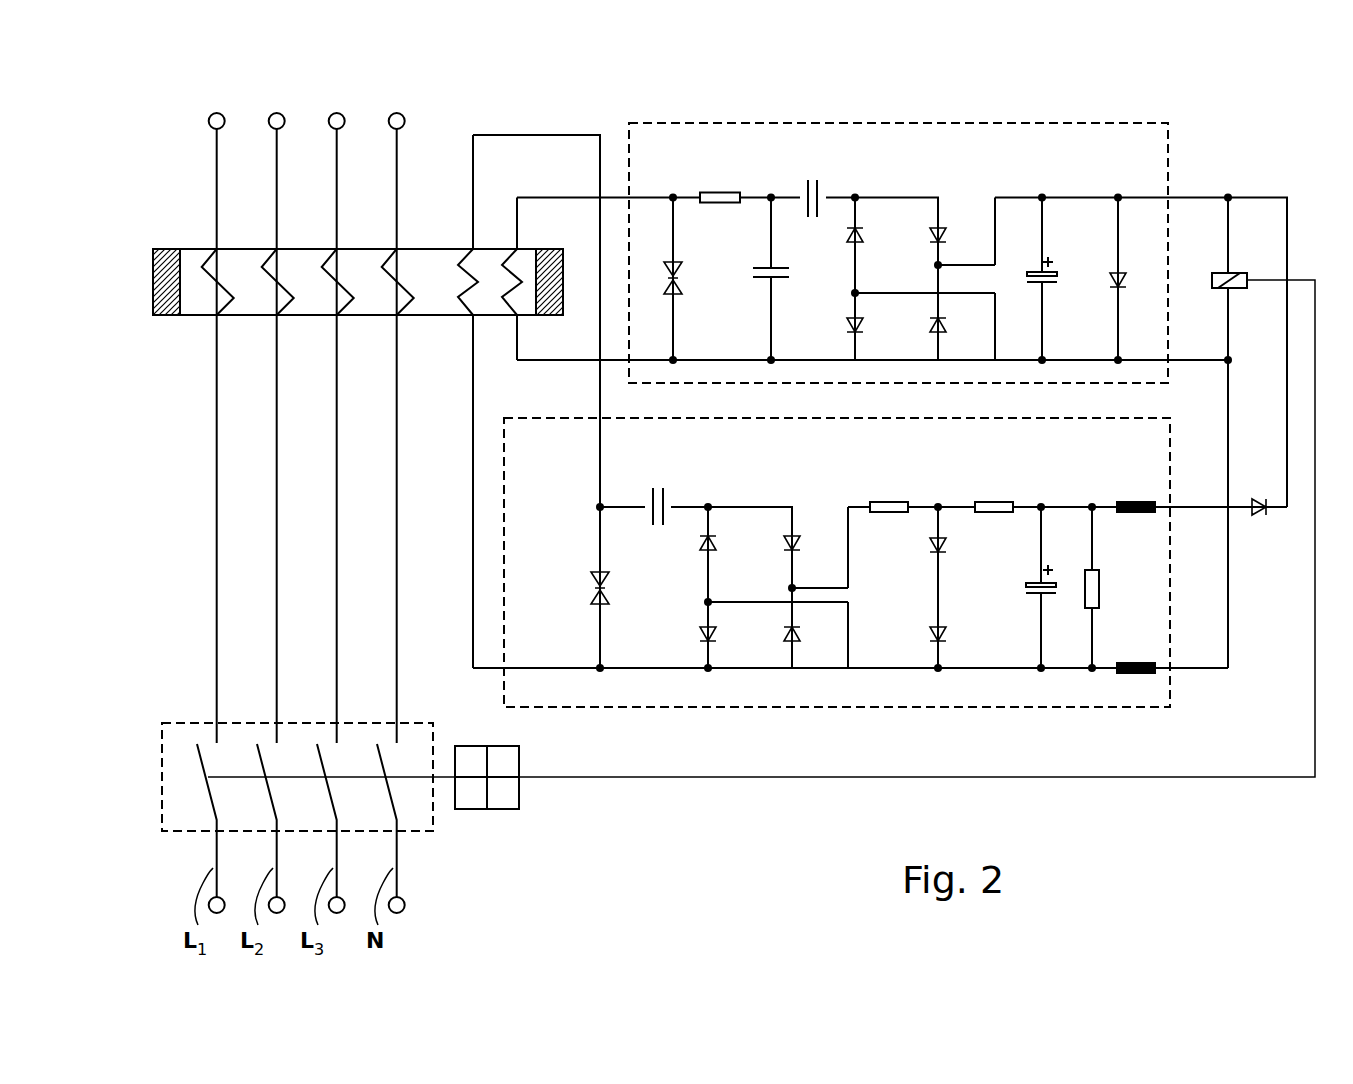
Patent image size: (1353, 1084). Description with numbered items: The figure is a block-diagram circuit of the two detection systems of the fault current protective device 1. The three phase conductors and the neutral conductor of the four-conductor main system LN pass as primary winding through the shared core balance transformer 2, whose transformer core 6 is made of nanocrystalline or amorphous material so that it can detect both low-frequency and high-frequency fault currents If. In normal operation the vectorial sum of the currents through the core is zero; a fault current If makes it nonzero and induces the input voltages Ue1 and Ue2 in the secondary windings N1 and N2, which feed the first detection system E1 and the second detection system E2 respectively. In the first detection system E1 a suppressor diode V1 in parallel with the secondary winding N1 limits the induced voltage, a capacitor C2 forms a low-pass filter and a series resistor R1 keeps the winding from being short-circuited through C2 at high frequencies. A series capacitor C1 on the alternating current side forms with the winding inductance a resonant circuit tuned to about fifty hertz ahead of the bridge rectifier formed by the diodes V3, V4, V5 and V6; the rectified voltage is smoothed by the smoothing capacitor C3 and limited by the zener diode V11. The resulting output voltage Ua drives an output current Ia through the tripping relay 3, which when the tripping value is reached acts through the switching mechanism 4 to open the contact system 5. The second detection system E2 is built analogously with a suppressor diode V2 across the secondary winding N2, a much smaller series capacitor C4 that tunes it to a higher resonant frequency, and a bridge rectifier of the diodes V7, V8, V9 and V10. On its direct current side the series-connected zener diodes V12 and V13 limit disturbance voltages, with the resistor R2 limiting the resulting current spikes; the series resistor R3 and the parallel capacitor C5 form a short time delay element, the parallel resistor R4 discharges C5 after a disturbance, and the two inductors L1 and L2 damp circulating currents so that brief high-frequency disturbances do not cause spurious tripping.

The fault current protective device 1 is at (719, 806).
The core balance transformer 2 is at (200, 324).
The tripping relay 3 is at (1210, 284).
The switching mechanism 4 is at (520, 794).
The contact system 5 is at (161, 810).
The transformer core 6 is at (366, 316).
The secondary winding N1 is at (350, 268).
The secondary winding N2 is at (480, 268).
The conductor main system LN is at (254, 543).
The first detection system E1 is at (956, 122).
The second detection system E2 is at (896, 709).
The series resistor R1 is at (718, 192).
The resistor R2 is at (890, 502).
The series resistor R3 is at (994, 502).
The parallel resistor R4 is at (1101, 591).
The series capacitor C1 is at (813, 180).
The capacitor C2 is at (752, 272).
The smoothing capacitor C3 is at (1034, 282).
The series capacitor C4 is at (658, 488).
The parallel capacitor C5 is at (1032, 590).
The suppressor diode V1 is at (662, 290).
The suppressor diode V2 is at (611, 598).
The diode V3 is at (850, 243).
The diode V4 is at (928, 236).
The diode V5 is at (847, 324).
The diode V6 is at (929, 324).
The diode V7 is at (699, 543).
The diode V8 is at (783, 544).
The diode V9 is at (700, 634).
The diode V10 is at (783, 634).
The zener diode V11 is at (1110, 282).
The zener diode V12 is at (928, 546).
The zener diode V13 is at (928, 634).
The inductor L1 is at (1135, 502).
The inductor L2 is at (1135, 664).
The fault current If is at (435, 182).
The output current Ia is at (1205, 208).
The output voltage Ua is at (1291, 280).
The input voltage Ue1 is at (555, 292).
The input voltage Ue2 is at (548, 584).